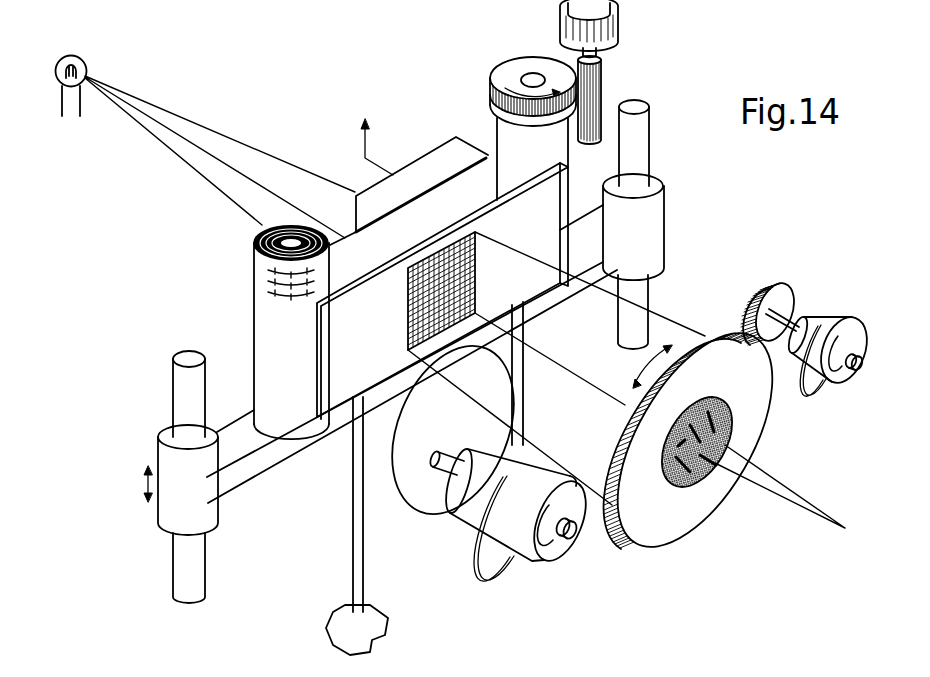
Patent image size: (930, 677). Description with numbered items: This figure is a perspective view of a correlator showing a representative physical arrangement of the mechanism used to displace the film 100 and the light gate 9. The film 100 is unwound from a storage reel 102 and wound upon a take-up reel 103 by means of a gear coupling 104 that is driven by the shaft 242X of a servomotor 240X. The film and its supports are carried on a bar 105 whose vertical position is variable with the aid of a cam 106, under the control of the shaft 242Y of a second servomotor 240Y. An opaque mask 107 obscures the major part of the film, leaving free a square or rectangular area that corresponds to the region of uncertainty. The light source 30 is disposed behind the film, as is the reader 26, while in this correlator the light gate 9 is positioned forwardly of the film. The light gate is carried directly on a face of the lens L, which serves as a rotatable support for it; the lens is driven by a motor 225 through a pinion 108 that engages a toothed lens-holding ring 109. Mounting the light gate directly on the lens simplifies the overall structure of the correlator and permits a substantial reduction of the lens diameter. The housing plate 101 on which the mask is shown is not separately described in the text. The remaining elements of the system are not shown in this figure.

The light source 30 is at (70, 55).
The reader 26 is at (425, 163).
The film 100 is at (303, 417).
The housing plate 101 is at (347, 248).
The storage reel 102 is at (254, 243).
The take-up reel 103 is at (500, 118).
The gear coupling 104 is at (533, 60).
The bar 105 is at (600, 242).
The cam 106 is at (390, 486).
The opaque mask 107 is at (520, 277).
The pinion 108 is at (777, 280).
The toothed lens-holding ring 109 is at (612, 527).
The motor 225 is at (843, 320).
The servomotor 240X is at (618, 3).
The shaft 242X is at (604, 53).
The servomotor 240Y is at (518, 558).
The shaft 242Y is at (437, 470).
The light gate 9 is at (730, 422).
The lens L is at (700, 470).